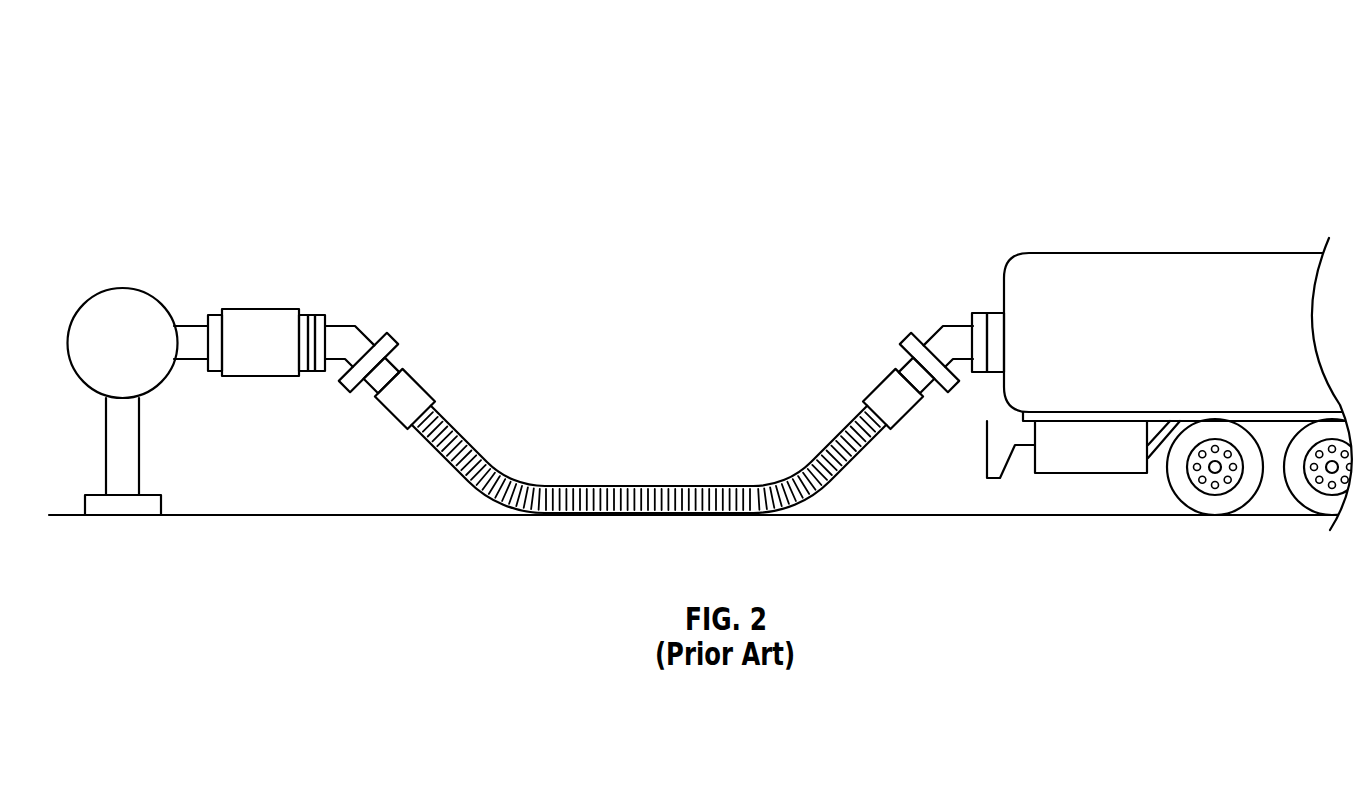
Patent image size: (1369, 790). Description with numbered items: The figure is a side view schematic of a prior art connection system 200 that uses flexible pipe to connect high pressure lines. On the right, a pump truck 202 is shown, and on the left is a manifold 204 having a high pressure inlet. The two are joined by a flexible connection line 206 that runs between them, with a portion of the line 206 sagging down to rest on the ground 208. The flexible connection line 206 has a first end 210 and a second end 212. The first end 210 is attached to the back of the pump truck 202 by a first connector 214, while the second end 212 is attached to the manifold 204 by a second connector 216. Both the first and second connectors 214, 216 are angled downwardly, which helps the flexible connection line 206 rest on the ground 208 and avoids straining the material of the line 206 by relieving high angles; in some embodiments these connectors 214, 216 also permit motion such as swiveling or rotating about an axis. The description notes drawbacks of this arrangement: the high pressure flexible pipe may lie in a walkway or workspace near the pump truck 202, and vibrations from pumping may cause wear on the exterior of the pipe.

The connection system 200 is at (252, 103).
The pump truck 202 is at (1108, 253).
The manifold 204 is at (122, 288).
The flexible connection line 206 is at (633, 486).
The ground 208 is at (380, 516).
The first end 210 is at (878, 382).
The second end 212 is at (420, 382).
The first connector 214 is at (955, 326).
The second connector 216 is at (344, 326).